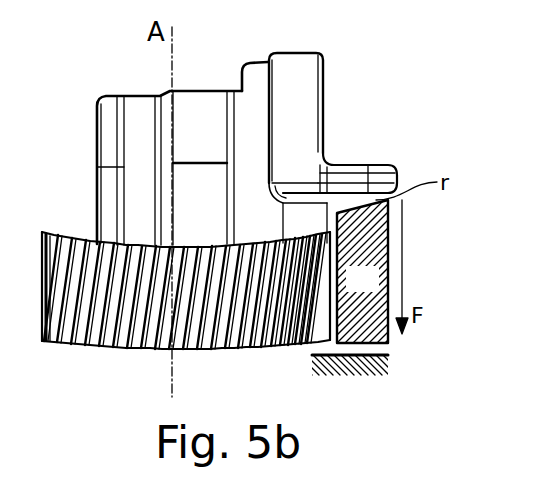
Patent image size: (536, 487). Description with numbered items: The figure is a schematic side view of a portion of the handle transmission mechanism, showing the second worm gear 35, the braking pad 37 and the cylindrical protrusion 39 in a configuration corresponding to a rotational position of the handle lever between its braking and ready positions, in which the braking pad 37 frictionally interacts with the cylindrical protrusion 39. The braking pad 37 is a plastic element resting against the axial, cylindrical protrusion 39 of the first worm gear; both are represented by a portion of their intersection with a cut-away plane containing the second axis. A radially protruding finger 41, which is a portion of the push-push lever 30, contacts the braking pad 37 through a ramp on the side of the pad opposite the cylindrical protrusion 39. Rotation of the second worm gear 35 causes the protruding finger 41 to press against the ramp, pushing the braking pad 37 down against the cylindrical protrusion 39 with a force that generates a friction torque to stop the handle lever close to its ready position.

The push-push lever 30 is at (325, 80).
The second worm gear 35 is at (96, 120).
The braking pad 37 is at (368, 271).
The cylindrical protrusion 39 is at (347, 381).
The protruding finger 41 is at (400, 163).